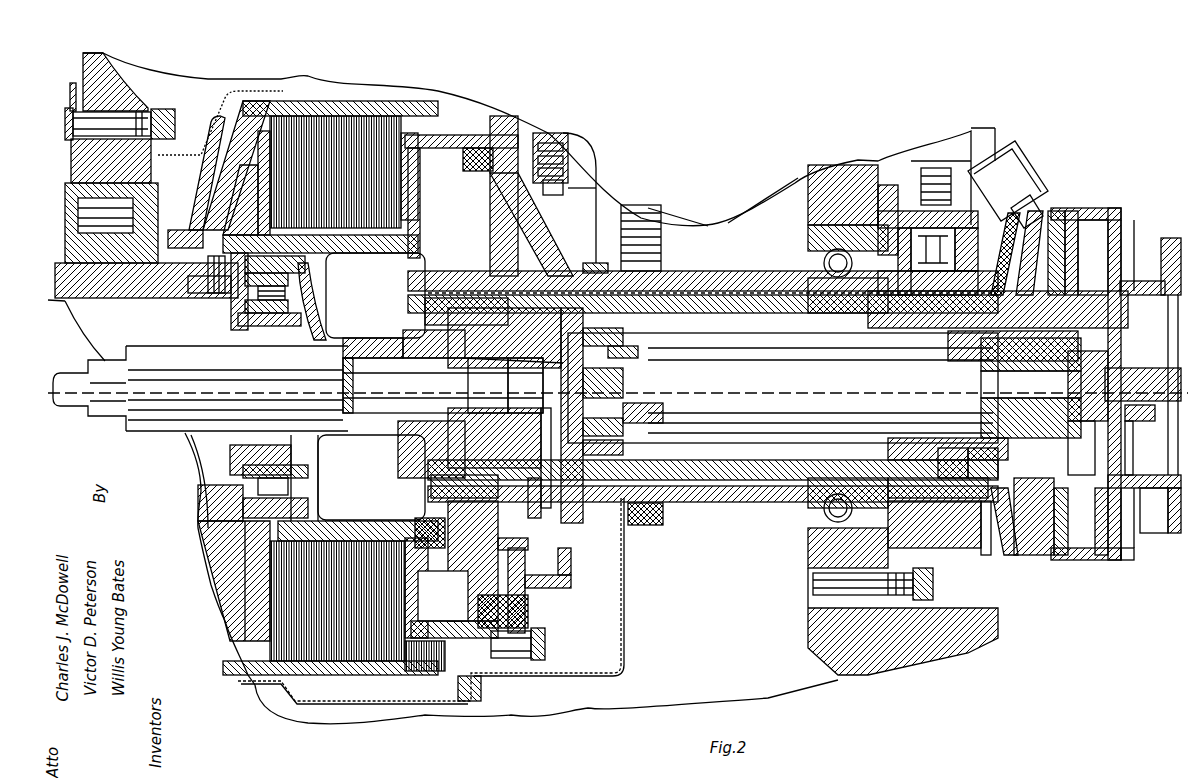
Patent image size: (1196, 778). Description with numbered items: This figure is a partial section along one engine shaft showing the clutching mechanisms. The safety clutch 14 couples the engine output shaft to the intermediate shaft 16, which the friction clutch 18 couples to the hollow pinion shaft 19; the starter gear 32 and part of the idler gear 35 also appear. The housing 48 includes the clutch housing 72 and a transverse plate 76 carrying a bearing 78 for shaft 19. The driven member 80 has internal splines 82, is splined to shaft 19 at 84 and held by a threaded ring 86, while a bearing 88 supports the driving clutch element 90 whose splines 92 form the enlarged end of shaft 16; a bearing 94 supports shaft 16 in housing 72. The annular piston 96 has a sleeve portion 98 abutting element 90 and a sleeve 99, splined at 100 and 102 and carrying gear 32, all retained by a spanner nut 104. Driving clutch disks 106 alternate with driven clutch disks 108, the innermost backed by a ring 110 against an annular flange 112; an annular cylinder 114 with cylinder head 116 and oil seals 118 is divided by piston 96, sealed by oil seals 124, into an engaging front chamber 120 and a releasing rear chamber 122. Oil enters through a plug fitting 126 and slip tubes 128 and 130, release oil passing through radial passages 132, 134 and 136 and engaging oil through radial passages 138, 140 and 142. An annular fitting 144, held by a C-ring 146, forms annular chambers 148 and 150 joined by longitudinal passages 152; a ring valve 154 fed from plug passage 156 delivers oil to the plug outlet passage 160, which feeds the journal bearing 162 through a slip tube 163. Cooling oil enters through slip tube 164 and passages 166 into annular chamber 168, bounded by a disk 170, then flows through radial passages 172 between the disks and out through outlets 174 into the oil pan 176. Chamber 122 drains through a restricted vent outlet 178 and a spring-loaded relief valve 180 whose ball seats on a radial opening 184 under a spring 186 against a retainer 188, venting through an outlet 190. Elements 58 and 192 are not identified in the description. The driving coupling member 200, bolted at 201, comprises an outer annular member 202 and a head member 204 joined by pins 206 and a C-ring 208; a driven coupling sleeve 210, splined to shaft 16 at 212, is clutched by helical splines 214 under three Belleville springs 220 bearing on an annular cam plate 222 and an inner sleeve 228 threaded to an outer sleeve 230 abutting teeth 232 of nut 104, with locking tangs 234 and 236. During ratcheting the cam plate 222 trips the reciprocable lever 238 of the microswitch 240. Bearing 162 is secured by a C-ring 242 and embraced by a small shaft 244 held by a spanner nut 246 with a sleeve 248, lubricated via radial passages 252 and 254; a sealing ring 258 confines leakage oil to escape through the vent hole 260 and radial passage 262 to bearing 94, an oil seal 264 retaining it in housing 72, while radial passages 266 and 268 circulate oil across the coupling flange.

The safety clutch 14 is at (1080, 200).
The intermediate shaft 16 is at (702, 290).
The friction clutch 18 is at (410, 82).
The pinion shaft 19 is at (60, 296).
The starter gear 32 is at (640, 518).
The idler gear 35 is at (645, 210).
The housing 48 is at (712, 210).
The clutch member 58 is at (520, 352).
The clutch housing 72 is at (912, 667).
The transverse plate 76 is at (110, 72).
The bearing 78 is at (90, 200).
The driven member 80 is at (292, 92).
The internal splines 82 is at (485, 108).
The spline connection 84 is at (168, 222).
The threaded ring 86 is at (185, 285).
The bearing 88 is at (300, 490).
The driving clutch element 90 is at (352, 505).
The splines 92 is at (410, 512).
The bearing 94 is at (815, 500).
The annular piston 96 is at (520, 585).
The sleeve portion 98 is at (600, 257).
The sleeve 99 is at (732, 494).
The spline 100 is at (662, 285).
The spline 102 is at (808, 256).
The spanner nut 104 is at (872, 306).
The driving clutch disks 106 is at (320, 655).
The driven clutch disks 108 is at (378, 655).
The ring 110 is at (240, 630).
The annular flange 112 is at (215, 600).
The annular cylinder 114 is at (512, 125).
The cylinder head 116 is at (625, 215).
The oil seals 118 is at (450, 215).
The front chamber 120 is at (527, 605).
The rear chamber 122 is at (563, 572).
The oil seals 124 is at (460, 605).
The plug fitting 126 is at (440, 450).
The slip tube 128 is at (400, 430).
The slip tube 130 is at (378, 340).
The radial passages 132 is at (521, 385).
The radial passages 134 is at (555, 495).
The radial passages 136 is at (575, 505).
The radial passages 138 is at (440, 400).
The radial passages 140 is at (530, 500).
The radial passages 142 is at (522, 540).
The annular fitting 144 is at (612, 420).
The C-ring 146 is at (655, 408).
The annular chamber 148 is at (545, 345).
The annular chamber 150 is at (615, 342).
The longitudinal passages 152 is at (615, 326).
The ring valve 154 is at (603, 447).
The plug passage 156 is at (486, 385).
The plug outlet passage 160 is at (605, 383).
The journal bearing 162 is at (978, 385).
The slip tube 163 is at (900, 390).
The slip tube 164 is at (160, 356).
The passages 166 is at (355, 332).
The annular chamber 168 is at (335, 395).
The disk 170 is at (310, 445).
The radial passages 172 is at (375, 250).
The outlets 174 is at (368, 95).
The oil pan 176 is at (600, 667).
The restricted vent outlet 178 is at (590, 190).
The spring-loaded relief valve 180 is at (548, 125).
The radial opening 184 is at (522, 240).
The spring 186 is at (576, 168).
The retainer 188 is at (560, 135).
The outlet 190 is at (566, 150).
The spring 192 is at (556, 165).
The driving coupling member 200 is at (1137, 234).
The bolted connection 201 is at (1170, 527).
The outer annular member 202 is at (1122, 555).
The head member 204 is at (1118, 288).
The pins 206 is at (1065, 555).
The C-ring 208 is at (1145, 540).
The driven coupling sleeve 210 is at (1125, 442).
The spline connection 212 is at (985, 440).
The helical splines 214 is at (1092, 208).
The Belleville springs 220 is at (1005, 550).
The annular cam plate 222 is at (1030, 552).
The inner sleeve 228 is at (934, 322).
The outer sleeve 230 is at (920, 306).
The axially projecting teeth 232 is at (892, 306).
The locking tang 234 is at (950, 440).
The locking tang 236 is at (1005, 205).
The reciprocable lever 238 is at (1045, 203).
The microswitch 240 is at (1032, 172).
The C-ring 242 is at (1055, 488).
The small shaft 244 is at (1116, 322).
The spanner nut 246 is at (1100, 360).
The sleeve 248 is at (1120, 414).
The radial passages 252 is at (1060, 352).
The radial passages 254 is at (998, 389).
The sealing ring 258 is at (960, 306).
The intermediate shaft vent hole 260 is at (975, 326).
The radial passage 262 is at (800, 308).
The oil seal 264 is at (930, 548).
The radial passage 266 is at (1144, 474).
The radial passage 268 is at (1088, 550).